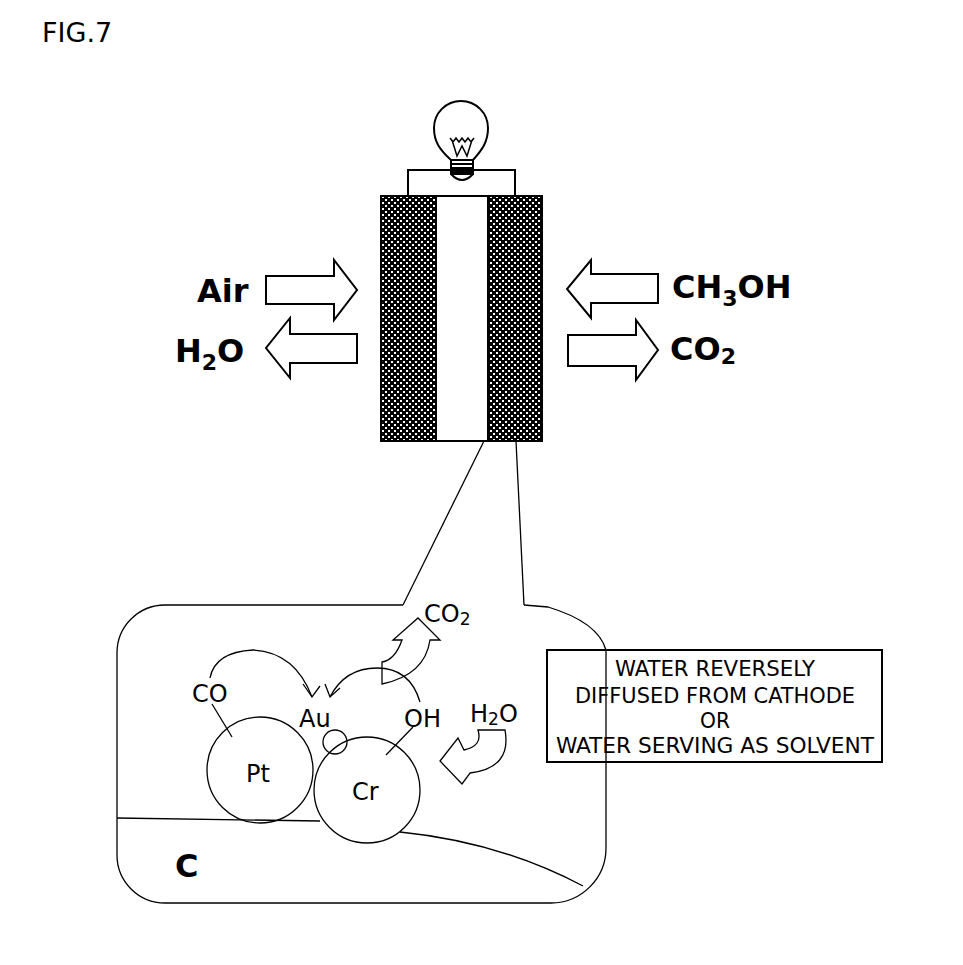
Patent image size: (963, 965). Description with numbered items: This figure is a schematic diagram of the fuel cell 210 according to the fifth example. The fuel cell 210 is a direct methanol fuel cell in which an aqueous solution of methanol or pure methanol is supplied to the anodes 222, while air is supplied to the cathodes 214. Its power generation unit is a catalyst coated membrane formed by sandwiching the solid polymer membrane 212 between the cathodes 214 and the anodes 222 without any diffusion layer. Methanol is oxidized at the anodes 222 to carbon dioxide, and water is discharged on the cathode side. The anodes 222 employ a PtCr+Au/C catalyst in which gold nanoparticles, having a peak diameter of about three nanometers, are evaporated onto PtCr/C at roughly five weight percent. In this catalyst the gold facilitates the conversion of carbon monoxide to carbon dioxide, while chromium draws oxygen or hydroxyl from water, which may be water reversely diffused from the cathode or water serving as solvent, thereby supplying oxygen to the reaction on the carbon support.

The fuel cell 210 is at (625, 136).
The solid polymer membrane 212 is at (462, 413).
The cathodes 214 is at (392, 443).
The anodes 222 is at (517, 443).